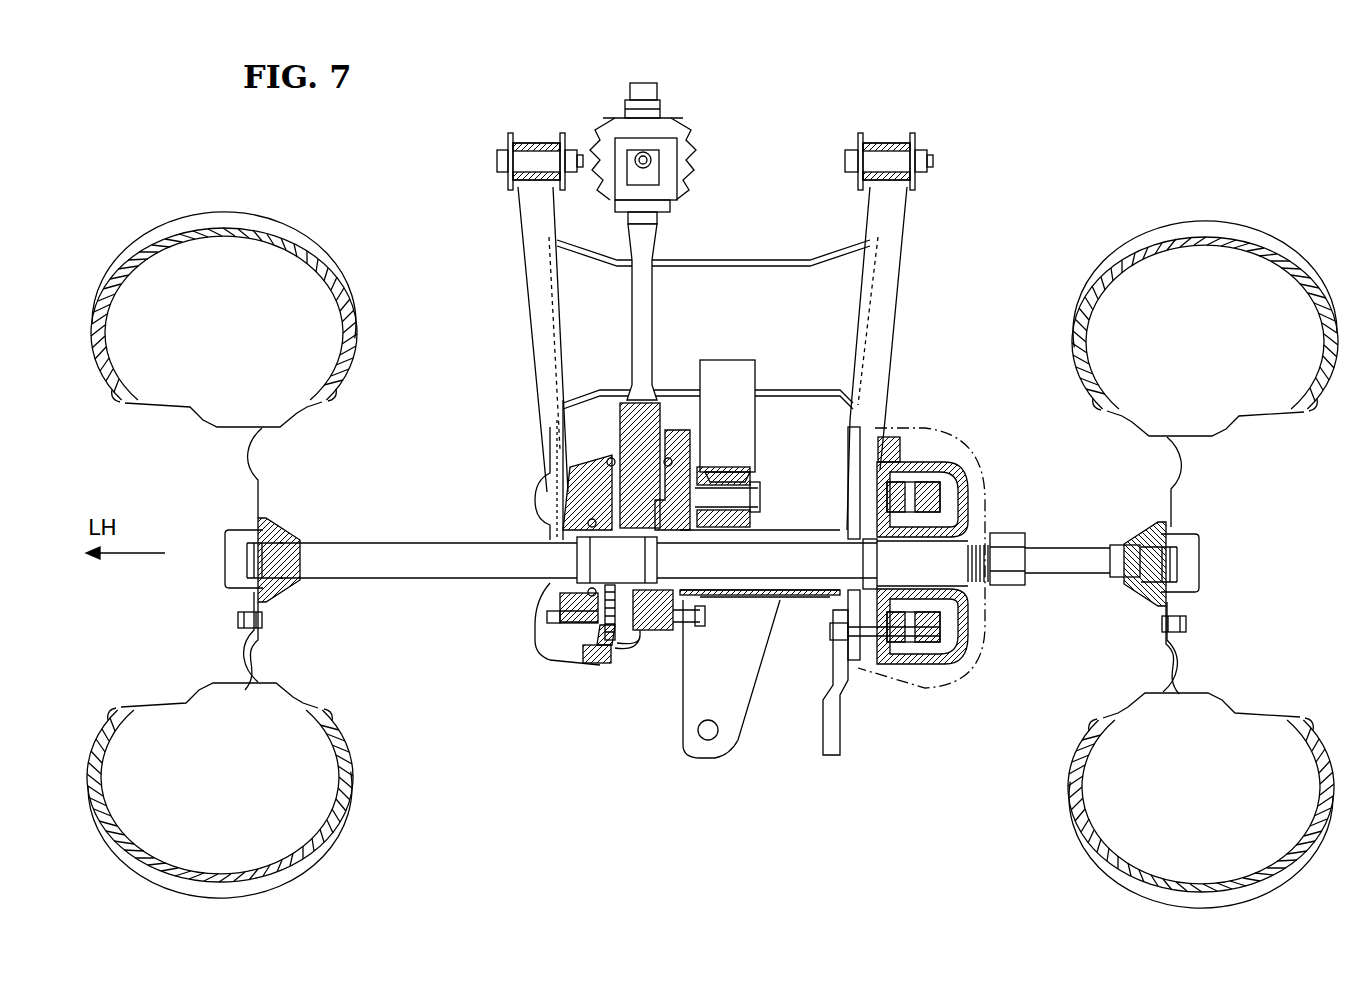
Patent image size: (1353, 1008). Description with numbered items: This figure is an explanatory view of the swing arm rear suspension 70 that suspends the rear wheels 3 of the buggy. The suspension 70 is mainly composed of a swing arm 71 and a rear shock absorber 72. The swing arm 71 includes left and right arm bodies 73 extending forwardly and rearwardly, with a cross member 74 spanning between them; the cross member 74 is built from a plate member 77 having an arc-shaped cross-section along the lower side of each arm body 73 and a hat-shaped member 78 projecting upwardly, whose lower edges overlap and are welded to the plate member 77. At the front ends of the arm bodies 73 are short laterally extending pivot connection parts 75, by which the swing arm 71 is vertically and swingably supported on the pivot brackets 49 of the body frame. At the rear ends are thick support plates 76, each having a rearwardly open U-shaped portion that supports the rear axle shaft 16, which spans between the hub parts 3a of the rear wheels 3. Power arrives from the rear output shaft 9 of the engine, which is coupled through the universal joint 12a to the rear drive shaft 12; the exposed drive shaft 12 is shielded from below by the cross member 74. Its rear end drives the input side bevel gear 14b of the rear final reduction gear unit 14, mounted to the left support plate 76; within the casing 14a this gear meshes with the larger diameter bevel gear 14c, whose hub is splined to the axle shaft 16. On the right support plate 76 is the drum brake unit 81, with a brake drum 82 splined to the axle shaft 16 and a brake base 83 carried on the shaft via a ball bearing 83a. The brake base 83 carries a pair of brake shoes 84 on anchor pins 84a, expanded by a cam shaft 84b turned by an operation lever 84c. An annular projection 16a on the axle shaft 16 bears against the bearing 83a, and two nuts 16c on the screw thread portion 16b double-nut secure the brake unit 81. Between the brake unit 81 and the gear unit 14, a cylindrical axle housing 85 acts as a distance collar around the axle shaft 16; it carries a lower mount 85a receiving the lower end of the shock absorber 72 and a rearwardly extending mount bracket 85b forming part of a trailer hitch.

The rear wheel 3 is at (175, 240).
The hub part 3a is at (290, 525).
The rear output shaft 9 is at (636, 85).
The rear drive shaft 12 is at (648, 318).
The universal joint 12a is at (686, 130).
The rear final reduction gear unit 14 is at (602, 548).
The casing 14a is at (632, 660).
The input side bevel gear 14b is at (668, 415).
The larger diameter bevel gear 14c is at (590, 690).
The rear axle shaft 16 is at (475, 580).
The annular projection 16a is at (840, 532).
The screw thread portion 16b is at (1030, 548).
The nut 16c is at (1005, 540).
The pivot bracket 49 is at (505, 150).
The rear suspension 70 is at (935, 280).
The swing arm 71 is at (905, 225).
The rear shock absorber 72 is at (758, 380).
The arm body 73 is at (535, 315).
The cross member 74 is at (713, 281).
The pivot connection part 75 is at (532, 140).
The support plate 76 is at (545, 420).
The plate member 77 is at (796, 262).
The hat-shaped member 78 is at (768, 298).
The drum brake unit 81 is at (963, 607).
The brake drum 82 is at (960, 660).
The brake base 83 is at (860, 665).
The ball bearing 83a is at (820, 600).
The brake shoe 84 is at (963, 545).
The anchor pin 84a is at (942, 490).
The cam shaft 84b is at (965, 640).
The operation lever 84c is at (830, 745).
The axle housing 85 is at (745, 704).
The lower mount 85a is at (752, 490).
The mount bracket 85b is at (735, 735).